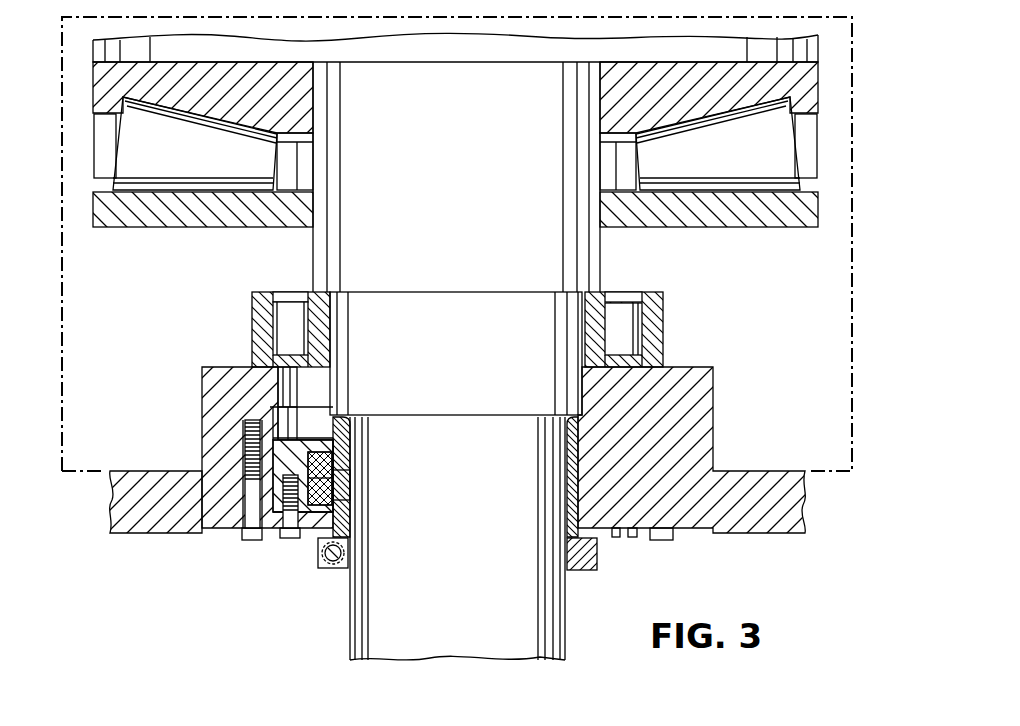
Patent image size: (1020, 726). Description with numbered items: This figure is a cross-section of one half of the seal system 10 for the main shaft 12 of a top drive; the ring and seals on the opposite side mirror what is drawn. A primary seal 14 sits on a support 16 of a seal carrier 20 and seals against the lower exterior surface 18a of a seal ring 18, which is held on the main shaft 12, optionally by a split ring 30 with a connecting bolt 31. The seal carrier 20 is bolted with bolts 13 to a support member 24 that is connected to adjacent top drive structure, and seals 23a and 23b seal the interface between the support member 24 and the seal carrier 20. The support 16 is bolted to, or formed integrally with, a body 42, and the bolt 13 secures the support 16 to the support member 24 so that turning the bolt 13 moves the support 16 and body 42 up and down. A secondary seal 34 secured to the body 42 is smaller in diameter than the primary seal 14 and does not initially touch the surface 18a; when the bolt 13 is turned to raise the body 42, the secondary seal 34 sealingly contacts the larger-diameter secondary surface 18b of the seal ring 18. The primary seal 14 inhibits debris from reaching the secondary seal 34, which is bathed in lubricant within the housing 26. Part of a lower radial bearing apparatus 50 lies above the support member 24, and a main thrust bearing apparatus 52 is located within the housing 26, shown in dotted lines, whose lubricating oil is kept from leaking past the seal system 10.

The seal system 10 is at (223, 543).
The main shaft 12 is at (556, 618).
The bolt 13 is at (253, 533).
The primary seal 14 is at (336, 503).
The support 16 is at (268, 522).
The seal ring 18 is at (342, 444).
The lower exterior surface 18a is at (340, 480).
The secondary surface 18b is at (357, 418).
The seal carrier 20 is at (280, 478).
The seal 23a is at (273, 452).
The seal 23b is at (238, 520).
The support member 24 is at (137, 527).
The housing 26 is at (183, 325).
The split ring 30 is at (345, 563).
The connecting bolt 31 is at (333, 567).
The secondary seal 34 is at (330, 468).
The body 42 is at (297, 437).
The lower radial bearing apparatus 50 is at (655, 335).
The main thrust bearing apparatus 52 is at (230, 224).